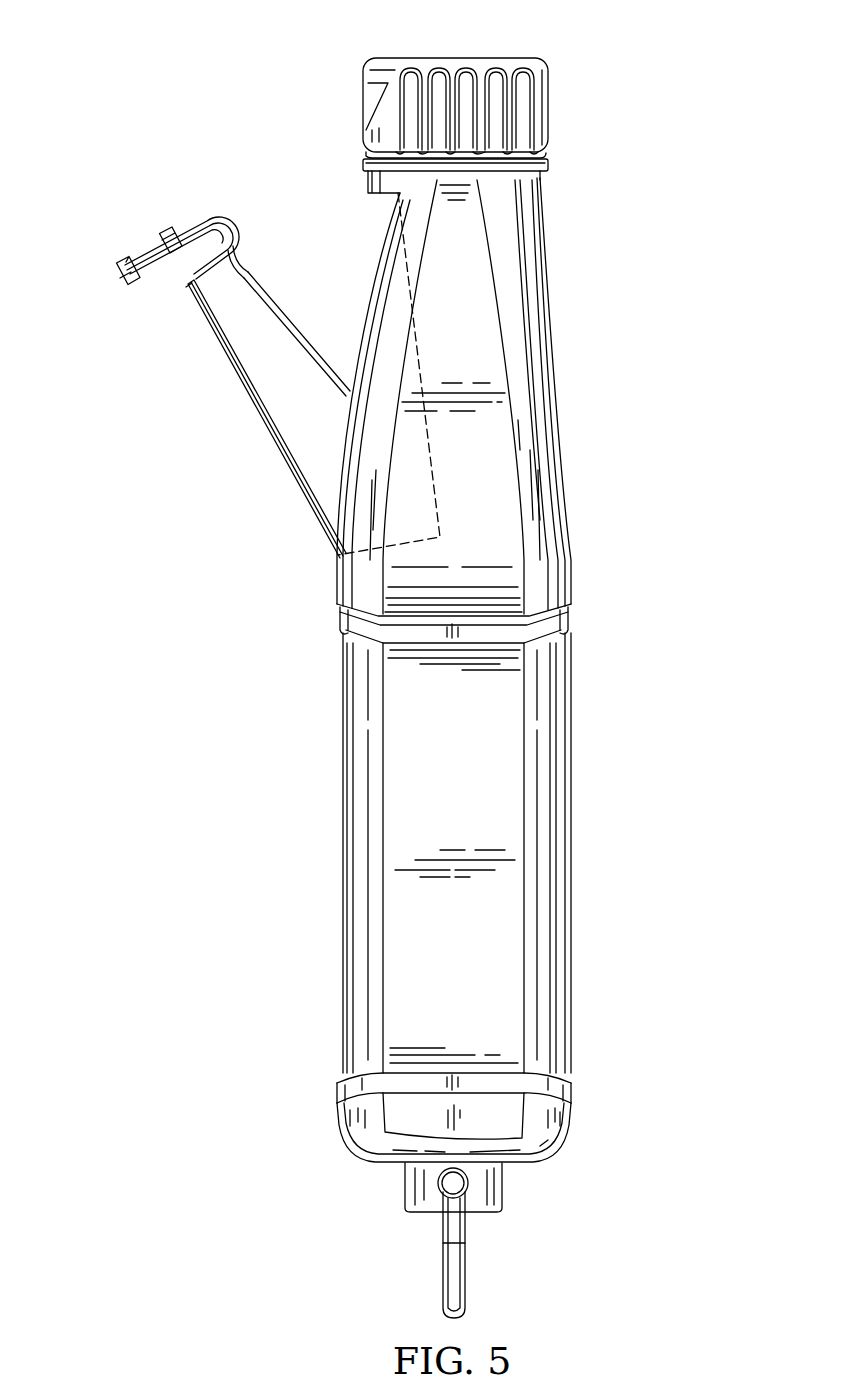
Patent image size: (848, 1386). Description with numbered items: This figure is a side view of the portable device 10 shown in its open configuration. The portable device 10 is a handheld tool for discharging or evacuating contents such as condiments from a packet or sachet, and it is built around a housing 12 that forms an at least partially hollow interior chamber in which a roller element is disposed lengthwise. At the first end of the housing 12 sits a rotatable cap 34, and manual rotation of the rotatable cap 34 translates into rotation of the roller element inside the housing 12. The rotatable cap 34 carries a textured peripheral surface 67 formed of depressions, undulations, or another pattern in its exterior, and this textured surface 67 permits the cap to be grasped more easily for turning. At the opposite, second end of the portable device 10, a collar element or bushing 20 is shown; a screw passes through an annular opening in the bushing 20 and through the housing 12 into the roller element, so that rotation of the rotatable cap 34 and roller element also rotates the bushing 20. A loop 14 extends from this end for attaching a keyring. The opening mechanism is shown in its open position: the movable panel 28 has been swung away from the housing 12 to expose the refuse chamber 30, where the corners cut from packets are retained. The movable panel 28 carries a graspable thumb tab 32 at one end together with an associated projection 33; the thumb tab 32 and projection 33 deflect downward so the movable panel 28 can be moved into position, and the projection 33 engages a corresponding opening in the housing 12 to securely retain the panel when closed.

The portable device 10 is at (643, 47).
The housing 12 is at (515, 445).
The loop 14 is at (460, 1277).
The bushing 20 is at (416, 1195).
The movable panel 28 is at (245, 393).
The refuse chamber 30 is at (374, 291).
The graspable thumb tab 32 is at (119, 279).
The projection 33 is at (177, 231).
The rotatable cap 34 is at (522, 108).
The textured peripheral surface 67 is at (461, 78).